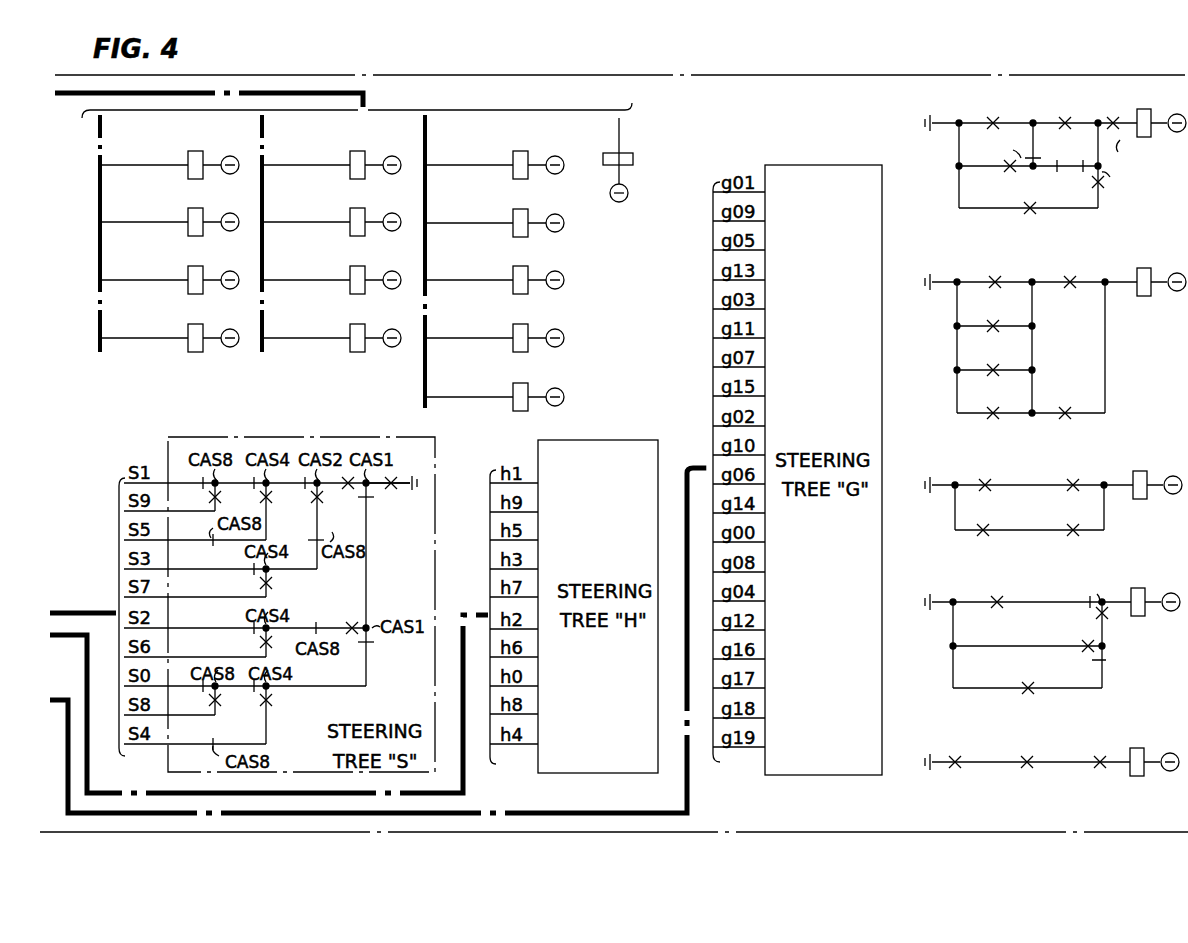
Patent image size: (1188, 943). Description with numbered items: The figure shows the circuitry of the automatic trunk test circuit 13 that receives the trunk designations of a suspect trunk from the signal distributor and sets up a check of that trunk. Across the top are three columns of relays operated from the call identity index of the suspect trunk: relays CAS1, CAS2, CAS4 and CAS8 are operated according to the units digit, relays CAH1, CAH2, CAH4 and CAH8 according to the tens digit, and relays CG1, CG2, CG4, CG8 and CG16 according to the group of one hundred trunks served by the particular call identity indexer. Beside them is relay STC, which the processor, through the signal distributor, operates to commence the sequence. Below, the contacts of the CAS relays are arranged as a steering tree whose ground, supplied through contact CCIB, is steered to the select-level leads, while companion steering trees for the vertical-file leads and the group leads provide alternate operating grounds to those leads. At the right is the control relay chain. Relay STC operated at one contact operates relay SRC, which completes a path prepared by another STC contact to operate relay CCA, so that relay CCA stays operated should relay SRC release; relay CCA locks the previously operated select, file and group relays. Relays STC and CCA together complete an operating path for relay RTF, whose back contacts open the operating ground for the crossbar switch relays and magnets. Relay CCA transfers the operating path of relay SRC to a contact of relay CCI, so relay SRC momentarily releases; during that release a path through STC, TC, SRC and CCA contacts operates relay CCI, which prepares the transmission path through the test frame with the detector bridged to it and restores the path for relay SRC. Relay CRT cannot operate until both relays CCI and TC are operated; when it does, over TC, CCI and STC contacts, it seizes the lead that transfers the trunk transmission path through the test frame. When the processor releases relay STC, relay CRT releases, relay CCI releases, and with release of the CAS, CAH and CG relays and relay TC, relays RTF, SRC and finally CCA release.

The automatic trunk test circuit 13 is at (960, 459).
The CCI relay CCI is at (1055, 165).
The CCA relay CCA is at (1055, 334).
The RTF relay RTF is at (1053, 494).
The SRC relay SRC is at (1052, 631).
The CRT relay CRT is at (1052, 760).
The STC relay STC is at (636, 160).
The CCIB contact CCIB is at (395, 490).
The CAS1 relay CAS1 is at (169, 154).
The CAS2 relay CAS2 is at (169, 211).
The CAS4 relay CAS4 is at (169, 269).
The CAS8 relay CAS8 is at (169, 327).
The CAH1 relay CAH1 is at (331, 154).
The CAH2 relay CAH2 is at (331, 211).
The CAH4 relay CAH4 is at (331, 269).
The CAH8 relay CAH8 is at (331, 327).
The CG1 relay CG1 is at (494, 154).
The CG2 relay CG2 is at (494, 212).
The CG4 relay CG4 is at (494, 269).
The CG8 relay CG8 is at (494, 327).
The CG16 relay CG16 is at (494, 386).